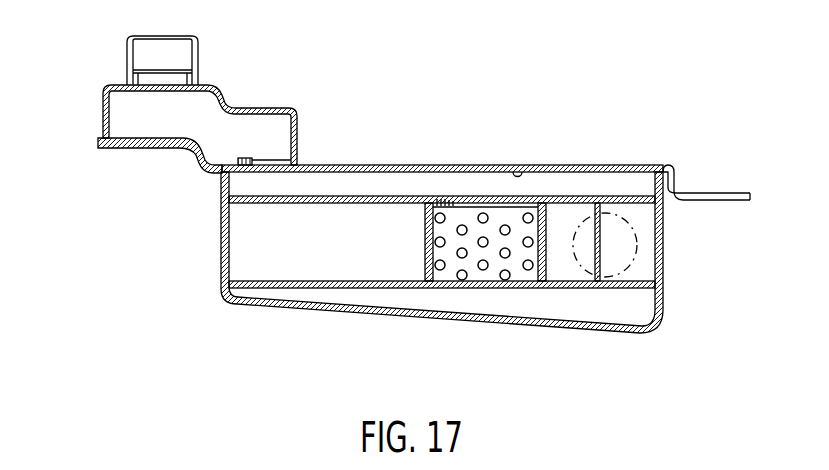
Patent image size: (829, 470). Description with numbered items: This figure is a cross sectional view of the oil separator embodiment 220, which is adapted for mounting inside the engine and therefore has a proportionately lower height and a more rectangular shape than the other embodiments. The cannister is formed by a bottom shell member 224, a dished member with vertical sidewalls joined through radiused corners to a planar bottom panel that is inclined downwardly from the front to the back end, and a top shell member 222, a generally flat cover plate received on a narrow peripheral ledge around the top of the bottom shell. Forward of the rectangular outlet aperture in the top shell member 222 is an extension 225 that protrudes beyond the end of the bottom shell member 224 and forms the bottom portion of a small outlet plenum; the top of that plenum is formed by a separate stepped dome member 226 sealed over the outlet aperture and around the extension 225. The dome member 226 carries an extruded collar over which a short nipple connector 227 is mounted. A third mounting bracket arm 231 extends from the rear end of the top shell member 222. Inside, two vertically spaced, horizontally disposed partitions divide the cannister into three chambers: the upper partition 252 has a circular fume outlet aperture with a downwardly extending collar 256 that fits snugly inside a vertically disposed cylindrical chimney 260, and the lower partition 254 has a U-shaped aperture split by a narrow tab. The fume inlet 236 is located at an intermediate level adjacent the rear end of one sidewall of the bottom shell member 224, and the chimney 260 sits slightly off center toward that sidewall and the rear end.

The embodiment 220 is at (419, 252).
The top shell member 222 is at (525, 177).
The bottom shell member 224 is at (652, 317).
The extension 225 is at (153, 125).
The stepped dome member 226 is at (223, 98).
The nipple connector 227 is at (198, 53).
The third mounting bracket arm 231 is at (703, 202).
The fume inlet 236 is at (638, 238).
The upper partition 252 is at (303, 202).
The lower partition 254 is at (350, 282).
The collar 256 is at (440, 198).
The chimney 260 is at (545, 253).